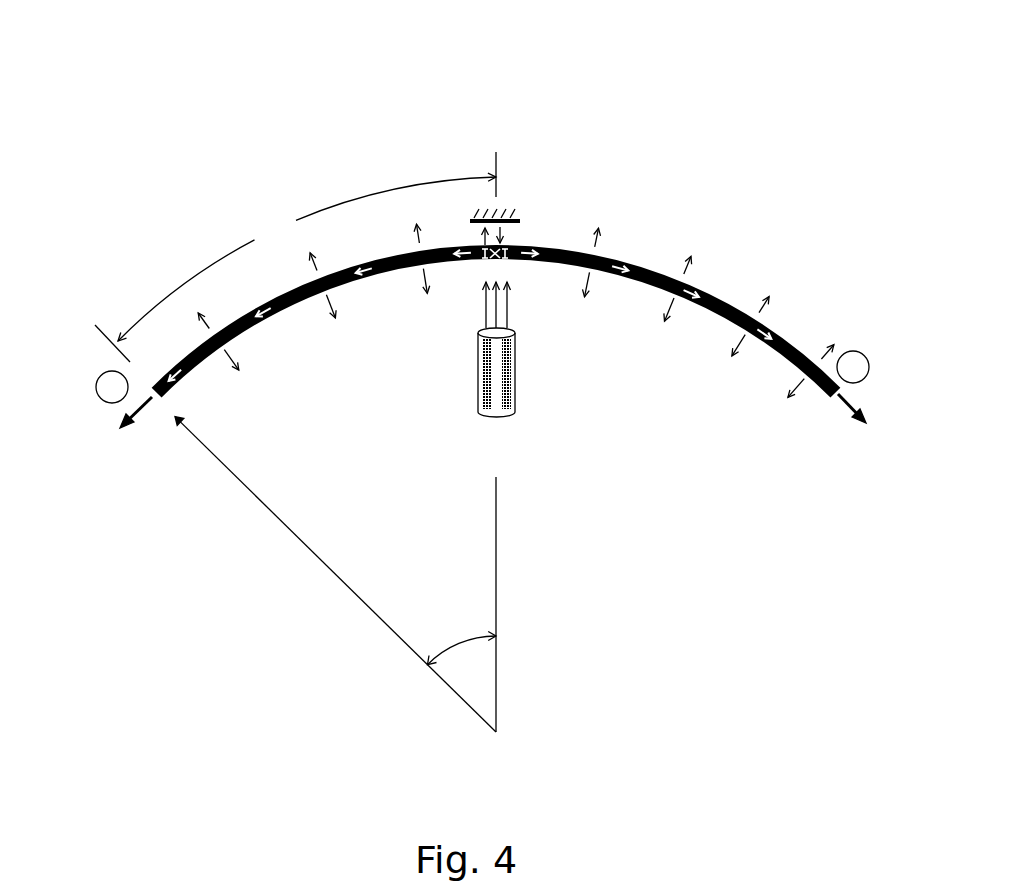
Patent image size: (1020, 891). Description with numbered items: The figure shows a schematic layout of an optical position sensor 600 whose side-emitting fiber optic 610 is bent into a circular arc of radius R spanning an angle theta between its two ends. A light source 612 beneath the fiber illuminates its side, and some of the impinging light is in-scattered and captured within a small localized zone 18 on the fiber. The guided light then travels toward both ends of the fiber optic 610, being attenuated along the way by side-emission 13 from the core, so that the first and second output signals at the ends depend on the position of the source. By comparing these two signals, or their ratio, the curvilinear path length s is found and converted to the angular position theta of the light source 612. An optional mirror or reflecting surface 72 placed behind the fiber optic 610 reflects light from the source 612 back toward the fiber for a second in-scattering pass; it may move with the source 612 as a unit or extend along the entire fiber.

The optical position sensor 600 is at (105, 82).
The side-emitting fiber optic 610 is at (710, 290).
The light source 612 is at (473, 365).
The mirror or reflecting surface 72 is at (523, 212).
The side-emission 13 is at (516, 295).
The localized zone 18 is at (508, 266).